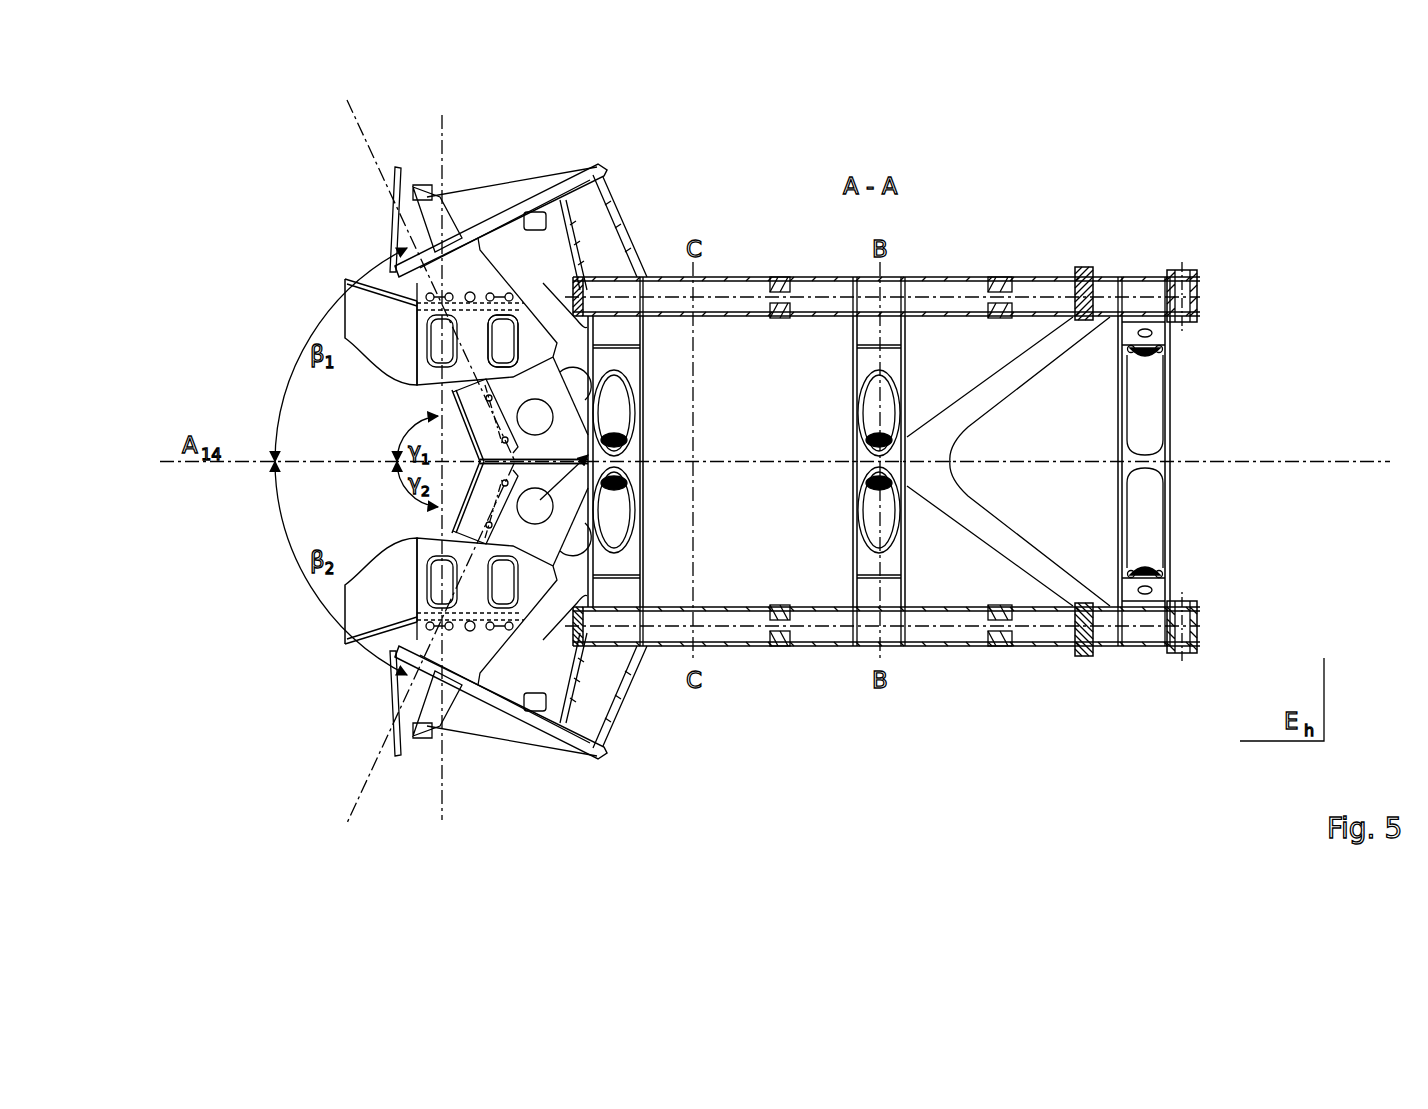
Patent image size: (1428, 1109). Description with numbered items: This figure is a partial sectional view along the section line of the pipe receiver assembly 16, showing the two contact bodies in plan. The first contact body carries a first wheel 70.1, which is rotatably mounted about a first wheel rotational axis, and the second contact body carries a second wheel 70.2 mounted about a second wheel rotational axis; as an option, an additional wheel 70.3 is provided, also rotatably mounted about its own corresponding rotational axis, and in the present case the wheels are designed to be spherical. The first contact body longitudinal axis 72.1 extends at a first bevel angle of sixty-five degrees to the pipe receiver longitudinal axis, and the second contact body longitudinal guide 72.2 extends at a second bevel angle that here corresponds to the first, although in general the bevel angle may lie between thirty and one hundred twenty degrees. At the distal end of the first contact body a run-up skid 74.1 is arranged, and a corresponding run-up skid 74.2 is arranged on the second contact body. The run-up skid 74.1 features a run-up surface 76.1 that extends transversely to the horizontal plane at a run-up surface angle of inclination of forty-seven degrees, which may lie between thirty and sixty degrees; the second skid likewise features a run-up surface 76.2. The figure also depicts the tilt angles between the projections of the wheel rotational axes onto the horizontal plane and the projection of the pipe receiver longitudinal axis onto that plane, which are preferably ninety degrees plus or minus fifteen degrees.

The conveyor frame assembly 16 is at (178, 548).
The first wheel 70.1 is at (438, 330).
The second wheel 70.2 is at (438, 594).
The additional wheel 70.3 is at (497, 312).
The first contact body longitudinal axis 72.1 is at (467, 405).
The second contact body longitudinal guide 72.2 is at (467, 518).
The run-up skid 74.1 is at (373, 343).
The run-up skid 74.2 is at (373, 580).
The run-up surface 76.1 is at (366, 331).
The run-up surface 76.2 is at (366, 592).